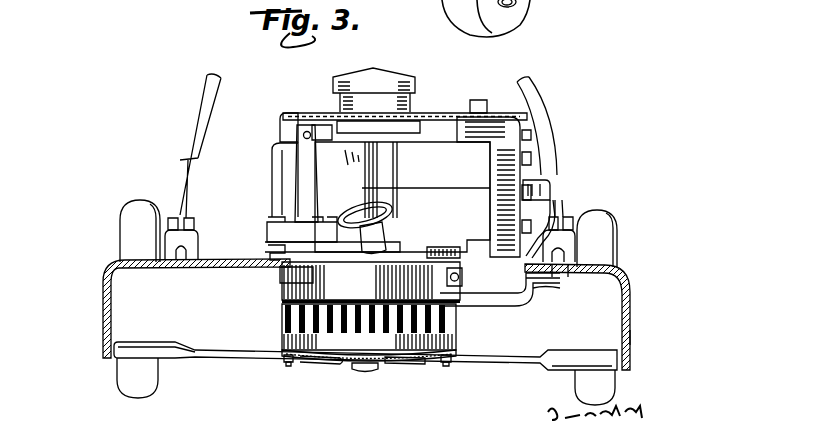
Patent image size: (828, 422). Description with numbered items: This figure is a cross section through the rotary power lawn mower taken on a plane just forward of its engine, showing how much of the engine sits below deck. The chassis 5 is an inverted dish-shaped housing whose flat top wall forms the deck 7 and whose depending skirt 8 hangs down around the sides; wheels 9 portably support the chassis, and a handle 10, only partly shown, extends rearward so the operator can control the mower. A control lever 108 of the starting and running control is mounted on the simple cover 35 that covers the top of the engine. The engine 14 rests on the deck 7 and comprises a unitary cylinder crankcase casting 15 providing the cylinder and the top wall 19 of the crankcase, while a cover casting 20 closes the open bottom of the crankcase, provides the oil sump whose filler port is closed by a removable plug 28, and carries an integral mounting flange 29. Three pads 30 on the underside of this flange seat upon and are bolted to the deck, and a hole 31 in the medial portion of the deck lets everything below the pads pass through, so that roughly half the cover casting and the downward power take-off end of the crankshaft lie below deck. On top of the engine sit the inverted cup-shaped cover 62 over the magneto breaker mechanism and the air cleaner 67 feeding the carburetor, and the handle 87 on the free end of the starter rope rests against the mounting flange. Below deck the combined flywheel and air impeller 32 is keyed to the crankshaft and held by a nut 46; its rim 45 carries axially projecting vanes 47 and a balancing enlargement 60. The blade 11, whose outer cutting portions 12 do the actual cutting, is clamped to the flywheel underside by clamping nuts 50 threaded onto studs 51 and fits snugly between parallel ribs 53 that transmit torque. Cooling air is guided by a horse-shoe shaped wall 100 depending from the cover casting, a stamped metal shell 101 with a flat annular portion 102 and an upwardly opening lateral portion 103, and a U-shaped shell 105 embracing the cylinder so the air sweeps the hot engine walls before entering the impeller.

The chassis 5 is at (629, 268).
The deck 7 is at (210, 258).
The skirt 8 is at (632, 332).
The wheels 9 is at (130, 216).
The handle 10 is at (200, 100).
The blade 11 is at (205, 357).
The cutting portions 12 is at (158, 340).
The engine 14 is at (553, 150).
The cylinder crankcase casting 15 is at (282, 163).
The top wall 19 is at (328, 125).
The cover casting 20 is at (268, 231).
The plug 28 is at (326, 192).
The mounting flange 29 is at (424, 258).
The pads 30 is at (293, 281).
The hole 31 is at (283, 272).
The combined flywheel and air impeller 32 is at (462, 337).
The cover 35 is at (283, 118).
The rim 45 is at (285, 329).
The nut 46 is at (374, 372).
The vanes 47 is at (285, 311).
The clamping nuts 50 is at (283, 360).
The studs 51 is at (290, 364).
The ribs 53 is at (398, 364).
The enlargement 60 is at (312, 359).
The cover 62 is at (424, 118).
The air cleaner 67 is at (385, 85).
The handle 87 is at (385, 220).
The horse-shoe shaped wall 100 is at (363, 281).
The stamped metal shell 101 is at (470, 302).
The flat annular portion 102 is at (368, 300).
The lateral portion 103 is at (528, 288).
The U-shaped shell 105 is at (545, 180).
The control lever 108 is at (524, 95).